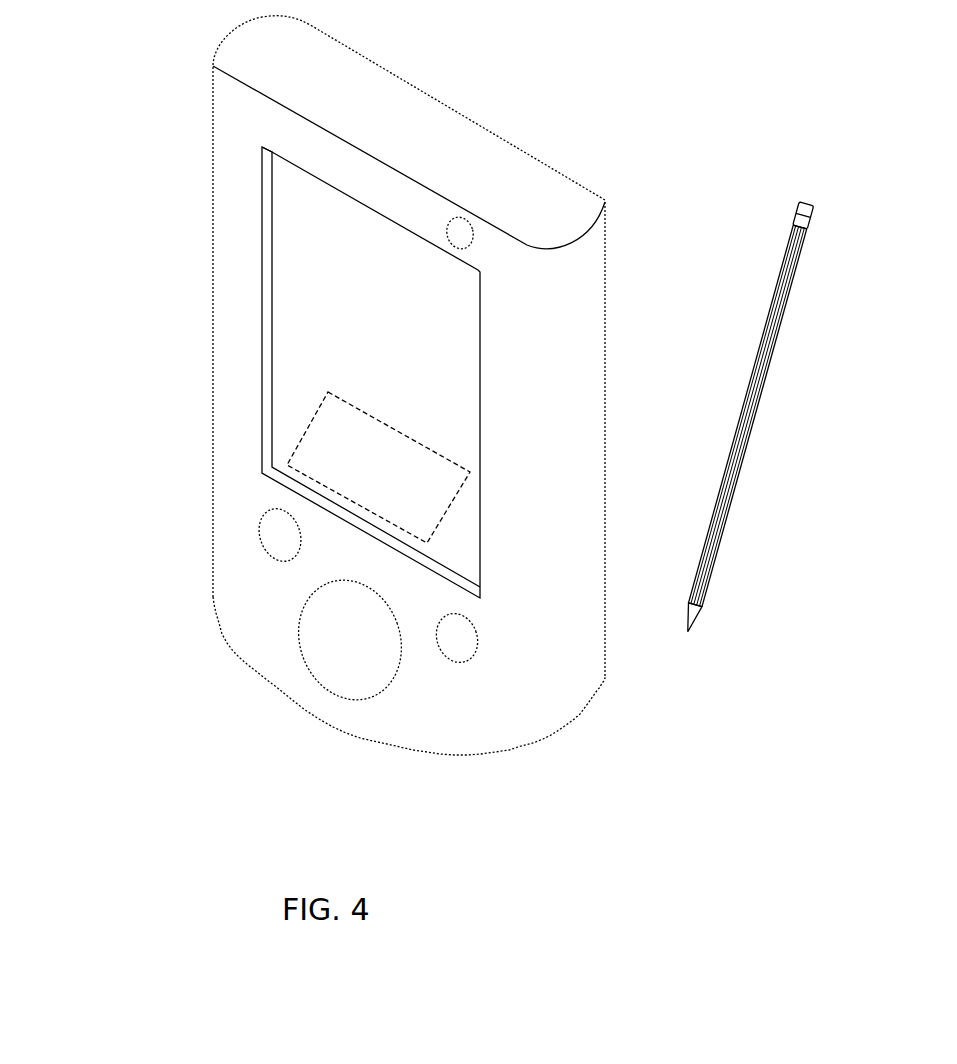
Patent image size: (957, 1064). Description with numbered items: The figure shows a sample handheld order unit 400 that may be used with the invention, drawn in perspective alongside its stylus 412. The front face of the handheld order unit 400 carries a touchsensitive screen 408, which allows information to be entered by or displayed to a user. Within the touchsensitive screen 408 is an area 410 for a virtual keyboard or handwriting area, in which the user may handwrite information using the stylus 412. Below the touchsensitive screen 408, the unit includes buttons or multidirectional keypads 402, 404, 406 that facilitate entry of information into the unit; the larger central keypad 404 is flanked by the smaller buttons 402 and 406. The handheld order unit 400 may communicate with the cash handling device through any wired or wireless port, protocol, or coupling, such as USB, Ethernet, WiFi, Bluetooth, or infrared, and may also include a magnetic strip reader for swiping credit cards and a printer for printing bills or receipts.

The handheld order unit 400 is at (512, 76).
The button or multidirectional keypad 402 is at (263, 545).
The button or multidirectional keypad 404 is at (327, 667).
The button or multidirectional keypad 406 is at (452, 648).
The touchsensitive screen 408 is at (297, 273).
The area for a virtual keyboard or handwriting area 410 is at (313, 440).
The stylus 412 is at (708, 575).